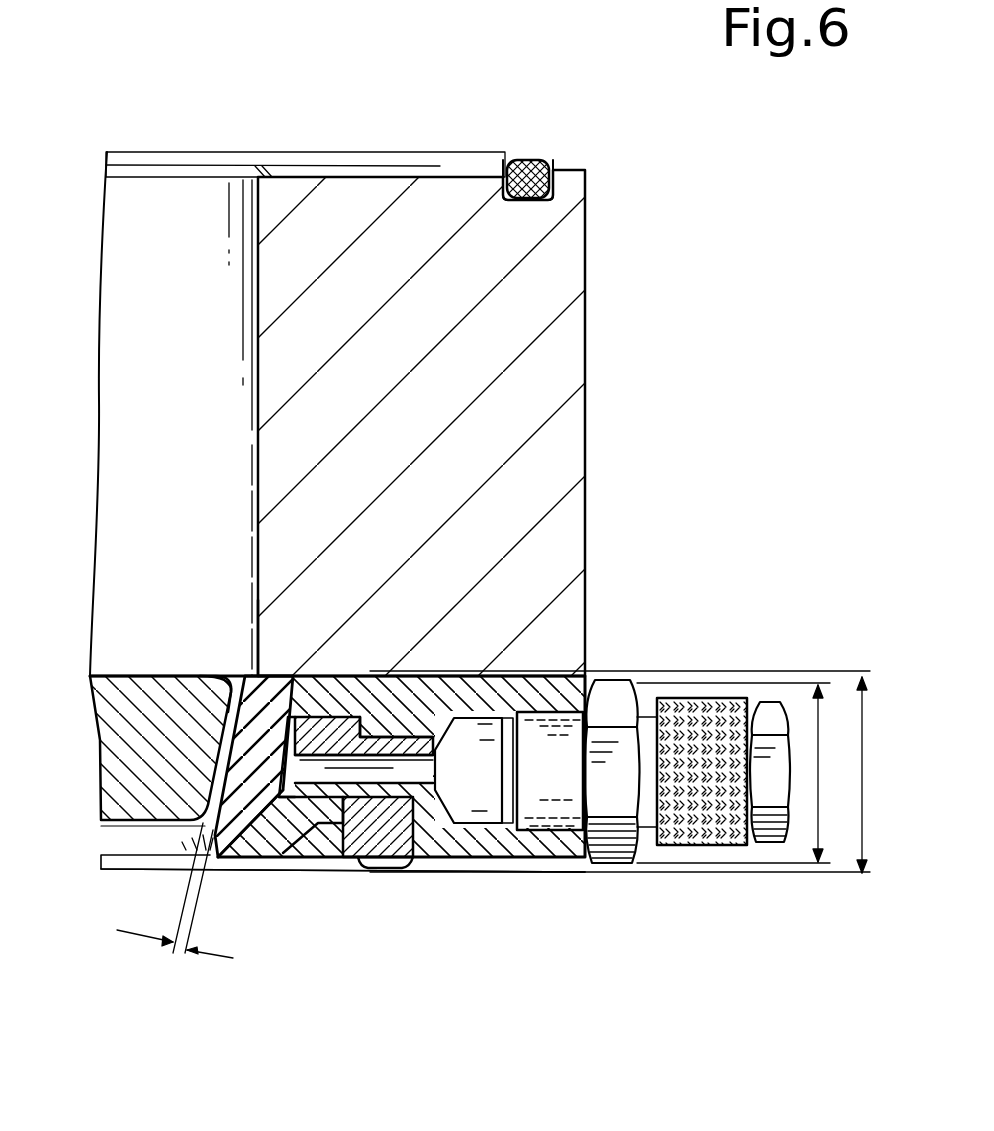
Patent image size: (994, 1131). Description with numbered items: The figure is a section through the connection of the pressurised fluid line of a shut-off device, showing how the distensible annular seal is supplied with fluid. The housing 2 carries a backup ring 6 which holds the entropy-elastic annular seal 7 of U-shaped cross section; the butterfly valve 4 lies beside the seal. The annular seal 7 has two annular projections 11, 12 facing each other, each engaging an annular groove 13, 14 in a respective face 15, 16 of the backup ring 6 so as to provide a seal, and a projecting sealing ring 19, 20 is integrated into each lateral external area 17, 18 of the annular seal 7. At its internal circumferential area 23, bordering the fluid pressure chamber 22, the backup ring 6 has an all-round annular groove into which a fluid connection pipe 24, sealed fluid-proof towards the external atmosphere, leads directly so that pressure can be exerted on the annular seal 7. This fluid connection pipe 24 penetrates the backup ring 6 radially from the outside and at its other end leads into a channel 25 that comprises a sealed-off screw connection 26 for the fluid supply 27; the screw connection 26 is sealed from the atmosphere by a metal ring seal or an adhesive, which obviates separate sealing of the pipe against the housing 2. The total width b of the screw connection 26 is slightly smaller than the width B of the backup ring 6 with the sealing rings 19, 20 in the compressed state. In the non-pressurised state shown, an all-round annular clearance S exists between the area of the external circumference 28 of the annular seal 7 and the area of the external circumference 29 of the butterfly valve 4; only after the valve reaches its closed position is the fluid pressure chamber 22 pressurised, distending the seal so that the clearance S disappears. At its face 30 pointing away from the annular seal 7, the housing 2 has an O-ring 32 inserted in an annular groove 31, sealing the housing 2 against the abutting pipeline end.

The housing 2 is at (555, 297).
The butterfly valve 4 is at (132, 737).
The backup ring 6 is at (550, 850).
The annular seal 7 is at (257, 697).
The annular projection 11 is at (407, 800).
The annular projection 12 is at (440, 700).
The annular groove 13 is at (385, 863).
The annular groove 14 is at (383, 737).
The face of the backup ring 15 is at (521, 877).
The face of the backup ring 16 is at (490, 668).
The lateral external area 17 is at (258, 860).
The lateral external area 18 is at (282, 675).
The sealing ring 19 is at (378, 877).
The sealing ring 20 is at (392, 667).
The fluid pressure chamber 22 is at (305, 826).
The internal circumferential area 23 is at (280, 860).
The fluid connection pipe 24 is at (447, 858).
The channel 25 is at (550, 700).
The screw connection 26 is at (633, 668).
The fluid supply 27 is at (772, 835).
The area of the external circumference of the annular seal 28 is at (190, 678).
The area of the external circumference of the butterfly valve 29 is at (225, 797).
The face of the housing 30 is at (442, 160).
The annular groove 31 is at (548, 163).
The O-ring 32 is at (535, 160).
The annular clearance S is at (177, 953).
The width of the backup ring B is at (623, 775).
The total width of the screw connection b is at (733, 773).